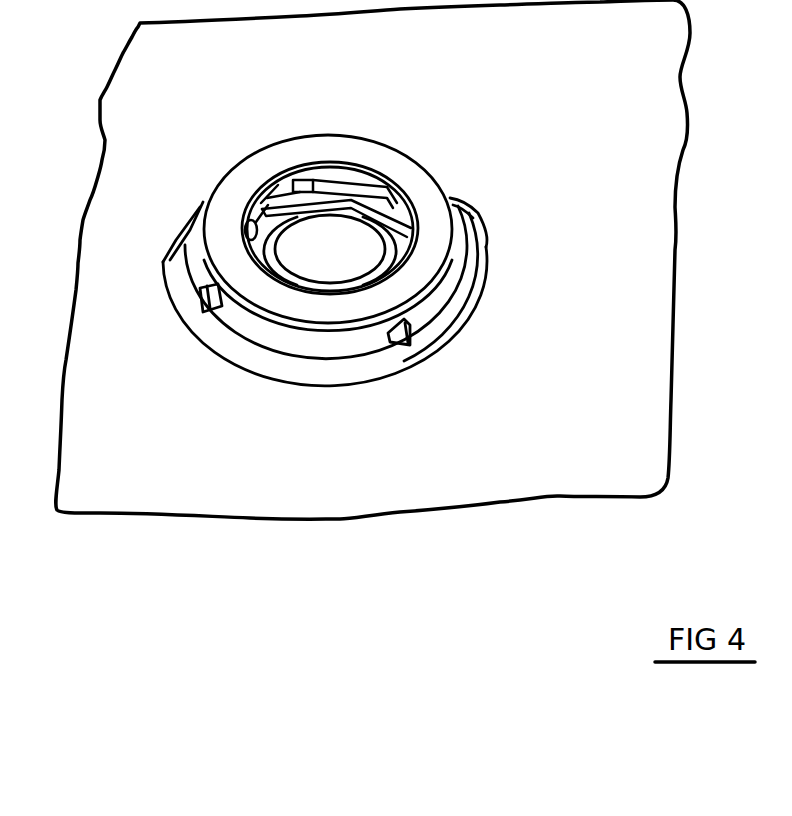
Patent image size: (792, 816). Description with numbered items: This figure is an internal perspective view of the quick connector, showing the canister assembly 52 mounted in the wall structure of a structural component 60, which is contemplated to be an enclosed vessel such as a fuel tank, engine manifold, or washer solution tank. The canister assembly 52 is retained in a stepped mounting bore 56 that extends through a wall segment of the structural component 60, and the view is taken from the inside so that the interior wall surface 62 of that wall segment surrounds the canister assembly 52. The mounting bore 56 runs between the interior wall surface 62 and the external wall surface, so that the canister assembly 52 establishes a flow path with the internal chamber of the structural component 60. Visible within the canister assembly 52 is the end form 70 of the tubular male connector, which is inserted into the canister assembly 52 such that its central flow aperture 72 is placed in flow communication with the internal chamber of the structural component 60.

The canister assembly 52 is at (447, 148).
The stepped mounting bore 56 is at (297, 352).
The structural component 60 is at (660, 181).
The interior wall surface 62 is at (635, 273).
The end form 70 is at (280, 226).
The central flow aperture 72 is at (347, 260).